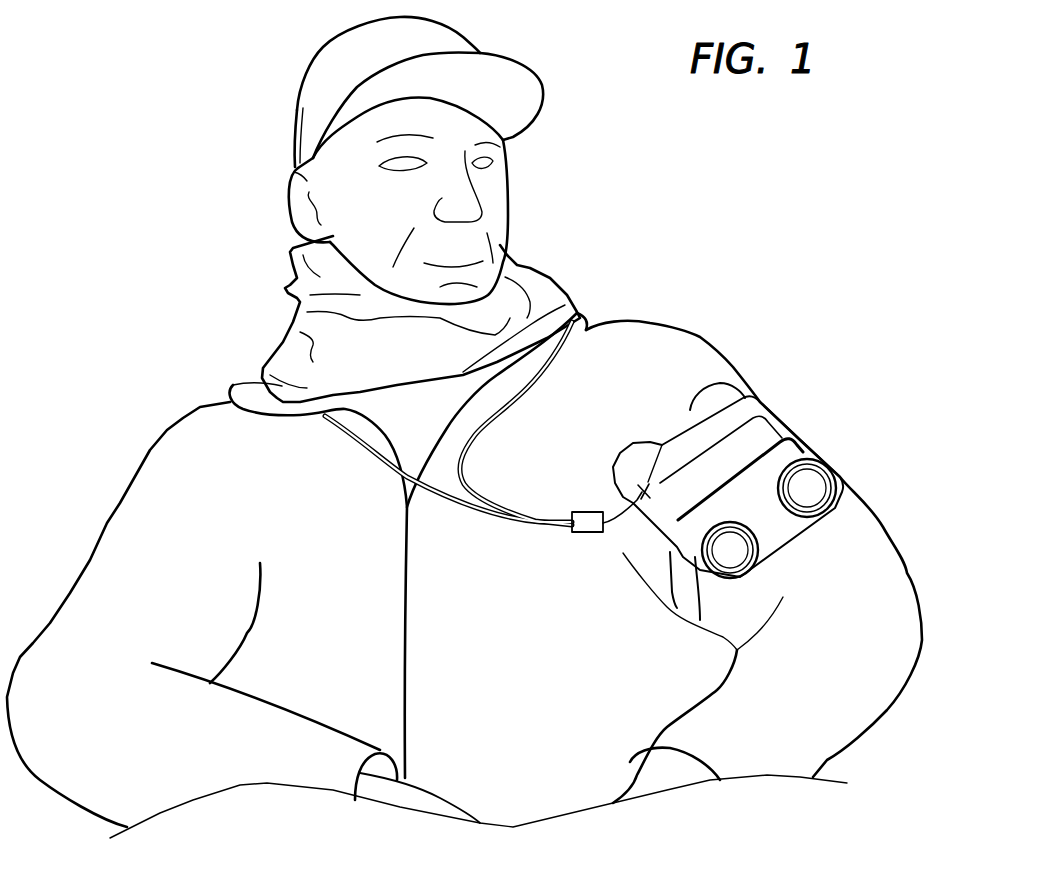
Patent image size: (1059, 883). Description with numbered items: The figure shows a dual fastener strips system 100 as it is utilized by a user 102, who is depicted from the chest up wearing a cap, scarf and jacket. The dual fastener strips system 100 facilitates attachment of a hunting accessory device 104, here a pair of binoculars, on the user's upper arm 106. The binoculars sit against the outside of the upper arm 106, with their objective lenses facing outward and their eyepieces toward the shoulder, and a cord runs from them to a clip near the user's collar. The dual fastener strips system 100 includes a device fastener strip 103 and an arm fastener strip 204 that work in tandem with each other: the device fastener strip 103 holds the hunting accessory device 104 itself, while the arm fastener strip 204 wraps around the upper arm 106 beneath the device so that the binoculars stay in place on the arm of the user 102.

The dual fastener strips system 100 is at (618, 434).
The user 102 is at (300, 104).
The device fastener strip 103 is at (775, 430).
The hunting accessory device 104 is at (827, 460).
The upper arm 106 is at (853, 550).
The arm fastener strip 204 is at (685, 607).